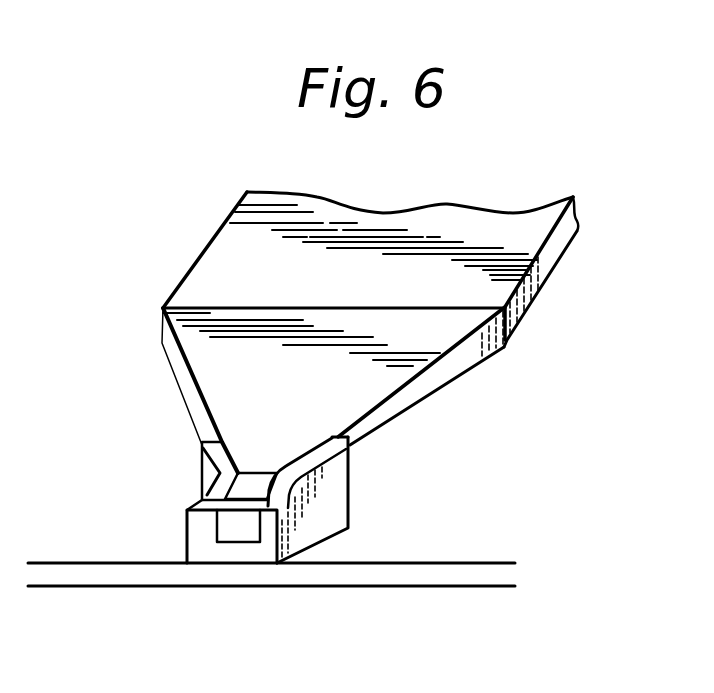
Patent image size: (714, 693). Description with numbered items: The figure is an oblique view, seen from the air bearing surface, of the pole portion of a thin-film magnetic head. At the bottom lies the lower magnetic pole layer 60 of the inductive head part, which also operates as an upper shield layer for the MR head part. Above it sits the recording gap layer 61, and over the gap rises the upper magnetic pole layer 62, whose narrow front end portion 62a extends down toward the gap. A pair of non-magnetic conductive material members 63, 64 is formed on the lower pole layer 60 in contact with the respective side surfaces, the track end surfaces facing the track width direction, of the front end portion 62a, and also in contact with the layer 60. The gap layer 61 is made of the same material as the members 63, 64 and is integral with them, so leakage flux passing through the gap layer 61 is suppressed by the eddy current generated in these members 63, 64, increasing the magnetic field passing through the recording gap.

The lower magnetic pole layer 60 is at (443, 577).
The recording gap layer 61 is at (238, 552).
The upper magnetic pole layer 62 is at (222, 363).
The front end portion 62a is at (229, 498).
The non-magnetic conductive material member 63 is at (198, 533).
The non-magnetic conductive material member 64 is at (272, 528).